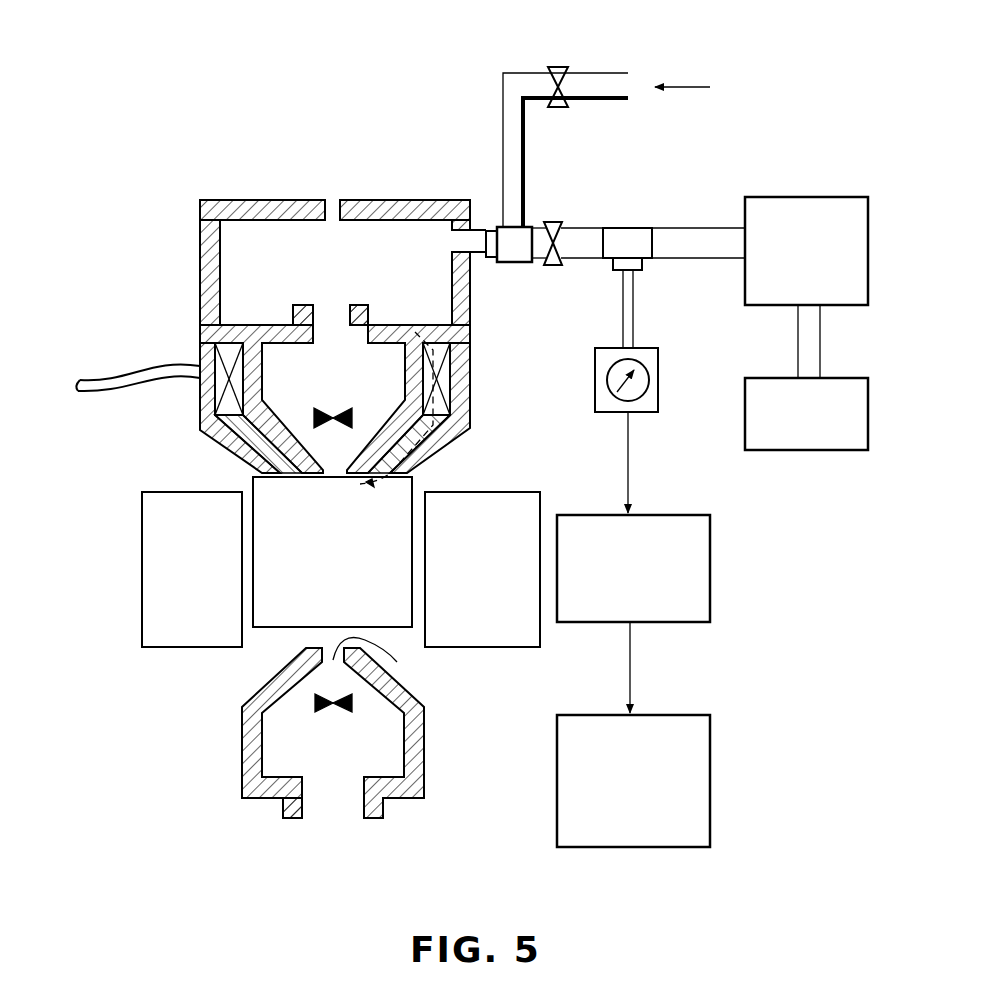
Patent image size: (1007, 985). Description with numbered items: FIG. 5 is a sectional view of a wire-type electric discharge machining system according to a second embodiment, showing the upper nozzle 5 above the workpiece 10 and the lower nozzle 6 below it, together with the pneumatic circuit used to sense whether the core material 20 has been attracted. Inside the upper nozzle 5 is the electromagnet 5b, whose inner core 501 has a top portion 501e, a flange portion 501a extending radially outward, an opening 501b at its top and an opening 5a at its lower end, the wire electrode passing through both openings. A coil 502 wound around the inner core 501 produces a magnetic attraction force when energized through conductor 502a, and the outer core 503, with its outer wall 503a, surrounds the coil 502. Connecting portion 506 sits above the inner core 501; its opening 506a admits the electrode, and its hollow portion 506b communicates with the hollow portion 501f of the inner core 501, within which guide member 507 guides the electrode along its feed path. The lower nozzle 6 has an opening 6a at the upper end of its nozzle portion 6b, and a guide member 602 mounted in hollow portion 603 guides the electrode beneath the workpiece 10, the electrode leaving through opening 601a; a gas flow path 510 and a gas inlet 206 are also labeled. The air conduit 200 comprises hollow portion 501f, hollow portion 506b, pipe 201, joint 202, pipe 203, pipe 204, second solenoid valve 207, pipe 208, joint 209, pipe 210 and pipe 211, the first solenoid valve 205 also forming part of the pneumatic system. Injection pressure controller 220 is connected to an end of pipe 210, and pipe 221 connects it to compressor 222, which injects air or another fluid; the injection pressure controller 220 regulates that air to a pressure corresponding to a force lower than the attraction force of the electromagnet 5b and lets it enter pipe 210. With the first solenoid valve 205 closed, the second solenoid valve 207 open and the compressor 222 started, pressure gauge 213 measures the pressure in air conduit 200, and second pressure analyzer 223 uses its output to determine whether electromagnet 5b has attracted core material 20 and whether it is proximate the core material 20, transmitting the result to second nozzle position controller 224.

The upper nozzle 5 is at (115, 290).
The opening 5a is at (337, 470).
The electromagnet 5b is at (173, 328).
The lower nozzle 6 is at (432, 774).
The opening 6a is at (375, 659).
The nozzle portion 6b is at (427, 737).
The workpiece 10 is at (142, 612).
The core material 20 is at (343, 593).
The air conduit 200 is at (687, 165).
The pipe 201 is at (493, 205).
The joint 202 is at (510, 217).
The pipe 203 is at (520, 146).
The pipe 204 is at (538, 240).
The first solenoid valve 205 is at (560, 67).
The gas inlet 206 is at (628, 73).
The second solenoid valve 207 is at (563, 225).
The pipe 208 is at (590, 247).
The joint 209 is at (637, 240).
The pipe 210 is at (703, 247).
The pipe 211 is at (630, 332).
The pressure gauge 213 is at (648, 412).
The injection pressure controller 220 is at (812, 197).
The pipe 221 is at (808, 362).
The compressor 222 is at (815, 450).
The second pressure analyzer 223 is at (712, 556).
The second nozzle position controller 224 is at (712, 756).
The inner core 501 is at (402, 324).
The flange portion 501a is at (463, 338).
The opening 501b is at (346, 308).
The top portion 501e is at (281, 325).
The hollow portion 501f is at (318, 388).
The coil 502 is at (443, 380).
The conductor 502a is at (80, 380).
The outer core 503 is at (460, 438).
The outer wall 503a is at (474, 360).
The connecting portion 506 is at (420, 200).
The opening 506a is at (328, 200).
The hollow portion 506b is at (245, 232).
The guide member 507 is at (340, 408).
The gas flow path 510 is at (440, 455).
The opening 601a is at (308, 820).
The guide member 602 is at (320, 715).
The hollow portion 603 is at (282, 753).